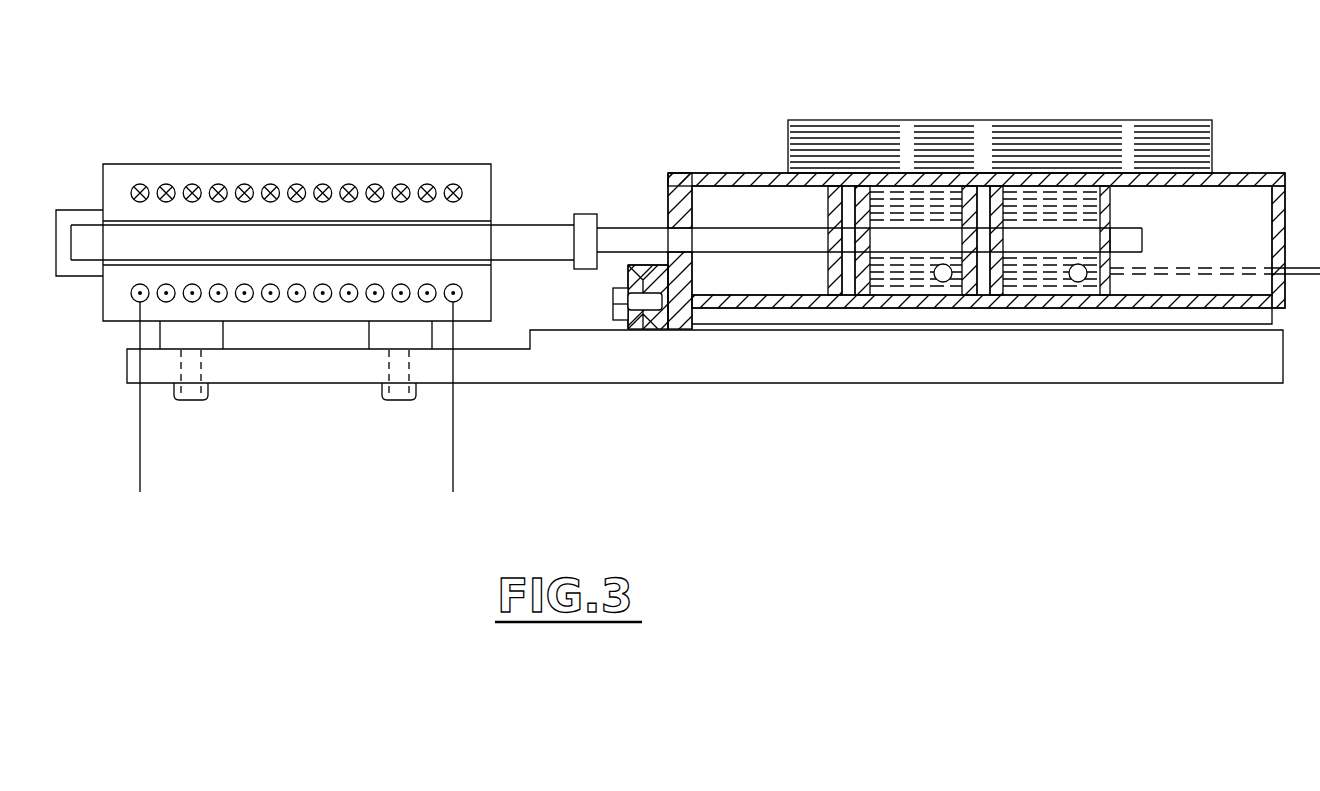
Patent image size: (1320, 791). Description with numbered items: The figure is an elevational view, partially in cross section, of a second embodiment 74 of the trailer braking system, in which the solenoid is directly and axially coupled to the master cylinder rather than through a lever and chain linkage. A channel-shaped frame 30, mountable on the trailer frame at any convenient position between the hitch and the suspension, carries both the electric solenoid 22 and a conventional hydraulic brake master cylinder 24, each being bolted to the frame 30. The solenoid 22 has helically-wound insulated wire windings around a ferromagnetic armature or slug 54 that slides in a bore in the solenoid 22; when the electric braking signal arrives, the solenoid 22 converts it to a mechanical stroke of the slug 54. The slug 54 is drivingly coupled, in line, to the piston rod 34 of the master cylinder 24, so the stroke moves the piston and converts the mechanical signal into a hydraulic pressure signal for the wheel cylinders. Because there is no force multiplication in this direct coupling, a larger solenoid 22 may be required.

The solenoid 22 is at (308, 163).
The armature or slug 54 is at (517, 222).
The piston rod 34 is at (630, 228).
The master cylinder 24 is at (1237, 172).
The second embodiment 74 is at (814, 101).
The frame 30 is at (1012, 382).